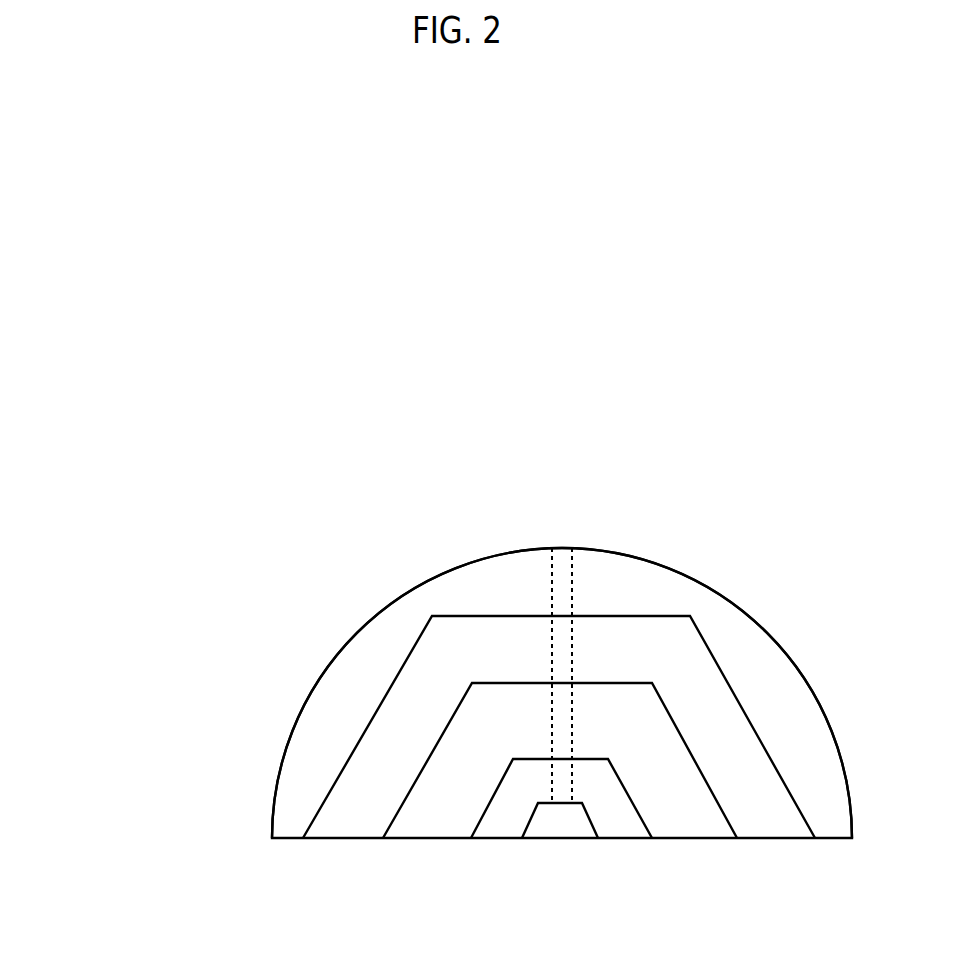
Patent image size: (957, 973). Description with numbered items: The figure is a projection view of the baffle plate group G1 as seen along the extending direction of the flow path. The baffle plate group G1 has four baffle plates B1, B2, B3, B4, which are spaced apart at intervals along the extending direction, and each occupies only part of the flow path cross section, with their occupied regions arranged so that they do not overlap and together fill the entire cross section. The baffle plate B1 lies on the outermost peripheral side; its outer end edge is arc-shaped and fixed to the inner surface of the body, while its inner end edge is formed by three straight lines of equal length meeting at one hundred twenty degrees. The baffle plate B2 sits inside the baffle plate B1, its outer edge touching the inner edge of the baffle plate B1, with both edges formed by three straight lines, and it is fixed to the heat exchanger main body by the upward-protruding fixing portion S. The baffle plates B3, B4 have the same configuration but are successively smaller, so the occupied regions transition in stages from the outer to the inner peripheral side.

The baffle plate group G1 is at (146, 612).
The fixing portion S is at (578, 573).
The baffle plate B1 is at (297, 758).
The baffle plate B2 is at (348, 810).
The baffle plate B3 is at (433, 810).
The baffle plate B4 is at (510, 810).